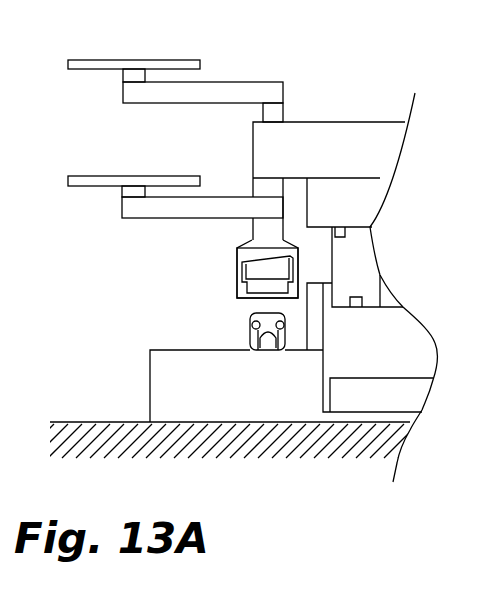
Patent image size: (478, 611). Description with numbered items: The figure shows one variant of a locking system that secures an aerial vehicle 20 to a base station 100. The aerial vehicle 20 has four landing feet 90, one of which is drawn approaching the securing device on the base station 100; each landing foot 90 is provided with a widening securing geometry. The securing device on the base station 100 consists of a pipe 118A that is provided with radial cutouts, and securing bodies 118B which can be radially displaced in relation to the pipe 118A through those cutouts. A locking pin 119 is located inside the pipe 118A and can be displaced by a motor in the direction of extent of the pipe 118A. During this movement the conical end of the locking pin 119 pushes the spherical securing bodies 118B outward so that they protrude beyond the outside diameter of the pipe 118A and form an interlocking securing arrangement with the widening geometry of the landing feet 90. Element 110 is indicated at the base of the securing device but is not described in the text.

The aerial vehicle 20 is at (352, 108).
The landing foot 90 is at (265, 230).
The base station 100 is at (200, 268).
The base fixture 110 is at (268, 352).
The pipe 118A is at (258, 343).
The securing bodies 118B is at (250, 326).
The locking pin 119 is at (250, 348).